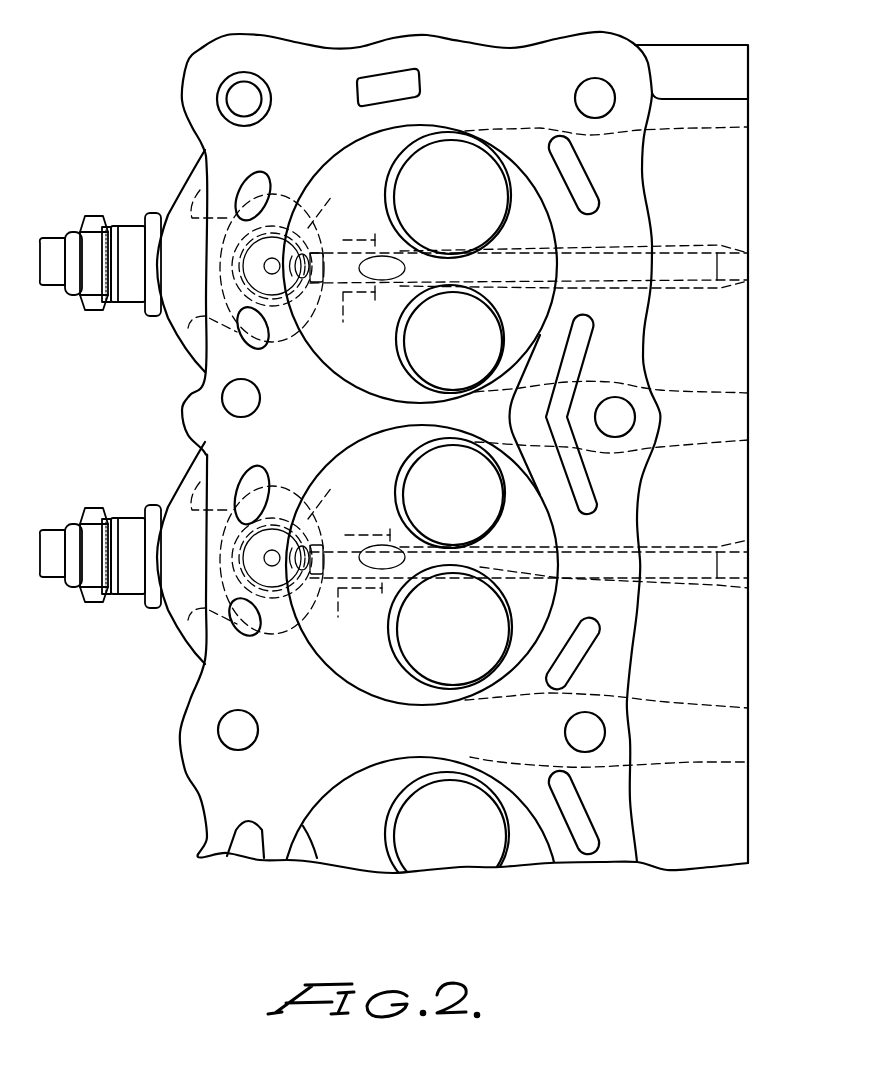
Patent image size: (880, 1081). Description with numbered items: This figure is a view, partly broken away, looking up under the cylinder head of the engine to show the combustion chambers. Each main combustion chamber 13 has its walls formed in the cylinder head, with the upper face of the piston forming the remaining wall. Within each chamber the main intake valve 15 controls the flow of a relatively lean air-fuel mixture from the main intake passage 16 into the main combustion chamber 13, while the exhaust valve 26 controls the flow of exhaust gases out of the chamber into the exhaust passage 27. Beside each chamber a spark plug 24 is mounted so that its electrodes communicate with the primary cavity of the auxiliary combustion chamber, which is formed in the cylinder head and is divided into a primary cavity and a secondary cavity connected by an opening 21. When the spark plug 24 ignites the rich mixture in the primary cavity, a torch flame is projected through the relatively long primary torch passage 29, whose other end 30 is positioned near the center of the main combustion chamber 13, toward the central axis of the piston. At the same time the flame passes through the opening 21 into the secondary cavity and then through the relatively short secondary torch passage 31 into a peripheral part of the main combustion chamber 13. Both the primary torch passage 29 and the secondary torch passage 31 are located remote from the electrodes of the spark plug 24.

The main combustion chamber 13 is at (371, 180).
The main intake valve 15 is at (457, 200).
The main intake passage 16 is at (700, 130).
The opening 21 is at (263, 558).
The spark plug 24 is at (48, 240).
The exhaust valve 26 is at (461, 346).
The exhaust passage 27 is at (693, 390).
The primary torch passage 29 is at (353, 465).
The other end of the torch passage 30 is at (388, 272).
The secondary torch passage 31 is at (343, 236).